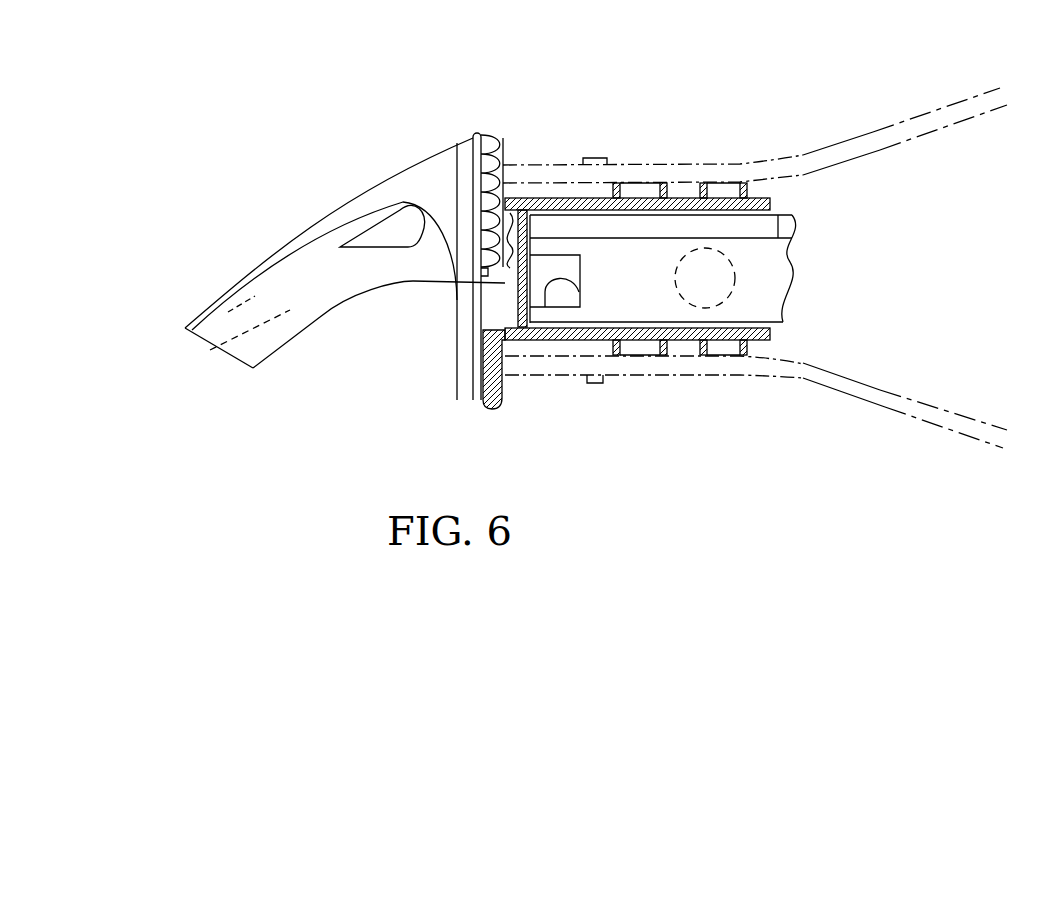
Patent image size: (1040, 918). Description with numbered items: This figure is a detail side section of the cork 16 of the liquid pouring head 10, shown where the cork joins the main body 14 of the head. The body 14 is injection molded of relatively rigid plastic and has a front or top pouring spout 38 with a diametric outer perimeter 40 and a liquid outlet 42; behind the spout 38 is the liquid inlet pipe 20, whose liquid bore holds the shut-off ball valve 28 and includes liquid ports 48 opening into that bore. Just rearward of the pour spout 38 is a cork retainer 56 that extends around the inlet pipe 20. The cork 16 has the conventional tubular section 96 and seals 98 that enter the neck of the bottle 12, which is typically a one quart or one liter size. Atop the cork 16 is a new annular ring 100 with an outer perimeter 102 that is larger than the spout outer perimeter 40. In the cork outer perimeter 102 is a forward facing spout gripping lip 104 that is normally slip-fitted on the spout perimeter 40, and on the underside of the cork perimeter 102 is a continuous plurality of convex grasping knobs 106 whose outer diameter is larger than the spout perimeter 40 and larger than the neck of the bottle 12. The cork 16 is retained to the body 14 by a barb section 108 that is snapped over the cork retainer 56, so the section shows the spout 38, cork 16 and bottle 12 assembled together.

The liquid pouring head 10 is at (482, 424).
The bottle 12 is at (935, 424).
The main body 14 is at (387, 162).
The sealing cork 16 is at (548, 198).
The liquid inlet pipe 20 is at (780, 215).
The shut-off ball valve 28 is at (745, 292).
The pouring spout 38 is at (267, 255).
The diametric outer perimeter 40 is at (499, 133).
The liquid outlet 42 is at (236, 340).
The liquid ports 48 is at (578, 292).
The cork retainer 56 is at (313, 318).
The tubular section 96 is at (758, 197).
The seals 98 is at (660, 185).
The annular ring 100 is at (483, 347).
The outer perimeter 102 is at (490, 415).
The spout gripping lip 104 is at (478, 132).
The convex grasping knobs 106 is at (505, 150).
The barb section 108 is at (512, 328).